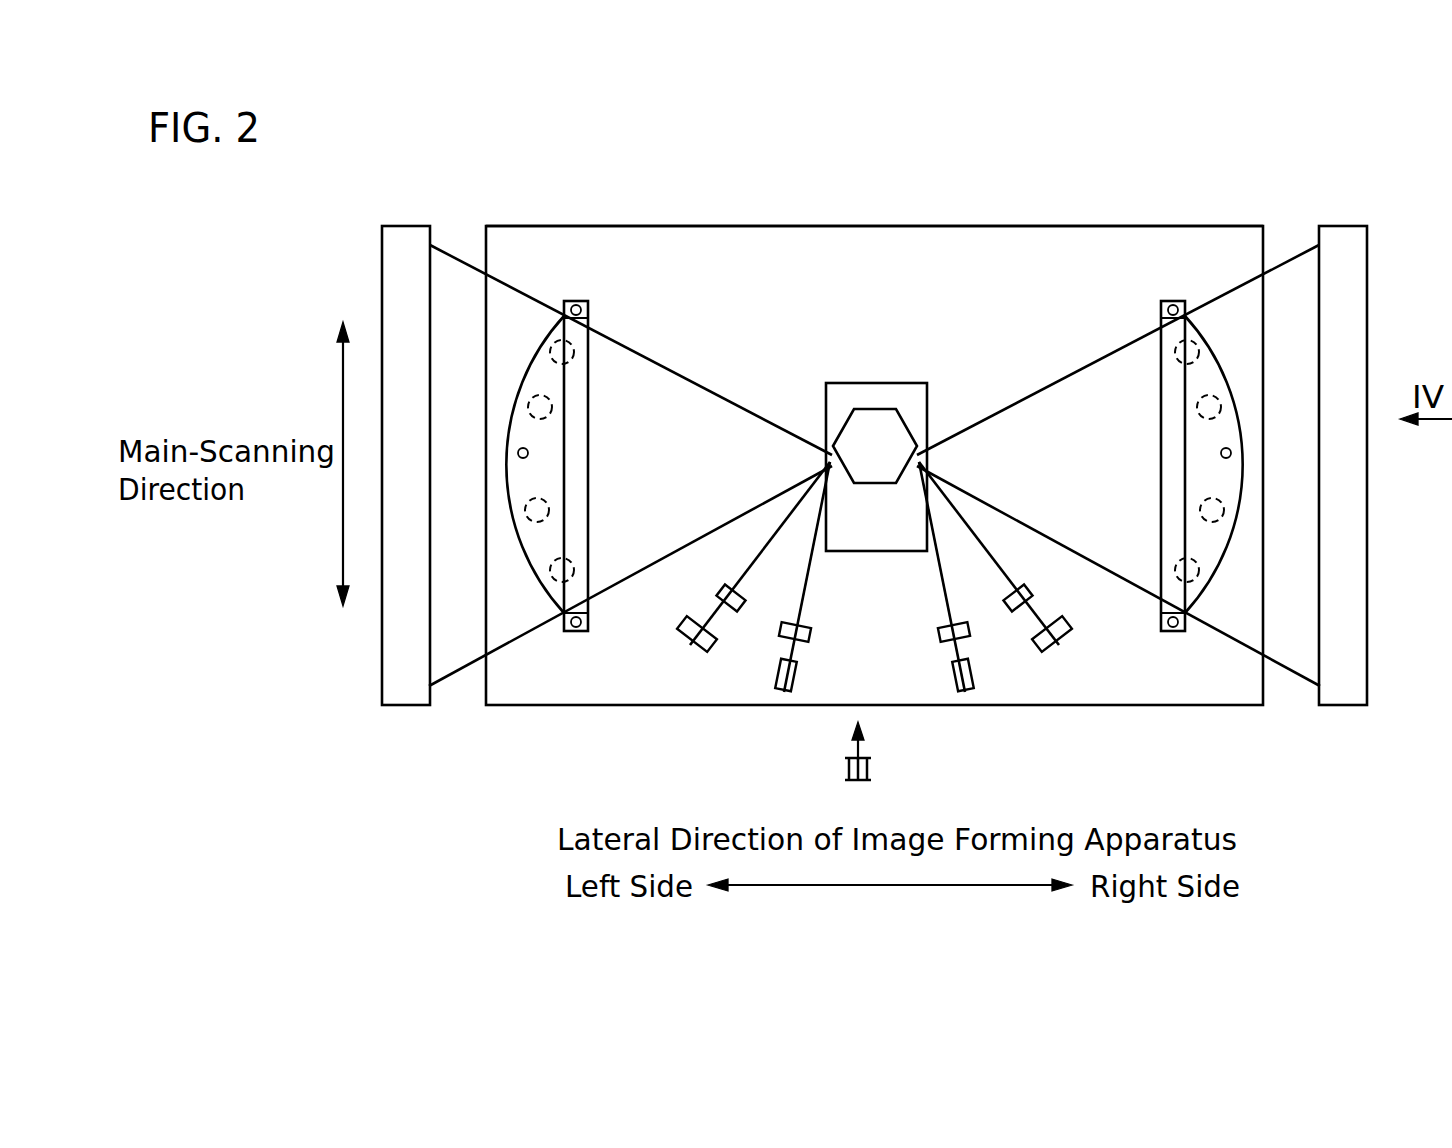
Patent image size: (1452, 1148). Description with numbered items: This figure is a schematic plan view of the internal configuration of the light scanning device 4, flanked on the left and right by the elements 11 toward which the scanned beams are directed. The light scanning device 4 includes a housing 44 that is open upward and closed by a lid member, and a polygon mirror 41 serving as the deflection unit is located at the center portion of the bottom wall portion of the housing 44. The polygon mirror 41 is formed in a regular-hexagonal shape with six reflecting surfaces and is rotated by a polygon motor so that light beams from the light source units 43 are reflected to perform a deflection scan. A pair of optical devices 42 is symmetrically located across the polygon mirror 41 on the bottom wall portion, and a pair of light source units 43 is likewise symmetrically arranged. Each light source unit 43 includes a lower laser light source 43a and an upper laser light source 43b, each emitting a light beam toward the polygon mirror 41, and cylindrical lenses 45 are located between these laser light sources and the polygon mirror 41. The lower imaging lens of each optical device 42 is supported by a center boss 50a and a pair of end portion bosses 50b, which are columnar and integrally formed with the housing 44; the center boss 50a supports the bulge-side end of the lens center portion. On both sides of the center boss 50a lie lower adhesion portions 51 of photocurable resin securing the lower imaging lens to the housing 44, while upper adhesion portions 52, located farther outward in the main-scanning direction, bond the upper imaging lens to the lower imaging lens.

The light scanning device 4 is at (570, 212).
The photosensitive drum 11 is at (405, 226).
The housing 44 is at (620, 226).
The polygon mirror 41 is at (879, 407).
The optical device 42 is at (588, 452).
The light source unit 43 is at (876, 703).
The lower laser light source 43a is at (784, 692).
The upper laser light source 43b is at (700, 644).
The cylindrical lens 45 is at (718, 596).
The center boss 50a is at (530, 456).
The end portion boss 50b is at (618, 297).
The lower adhesion portion 51 is at (551, 415).
The upper adhesion portion 52 is at (572, 365).